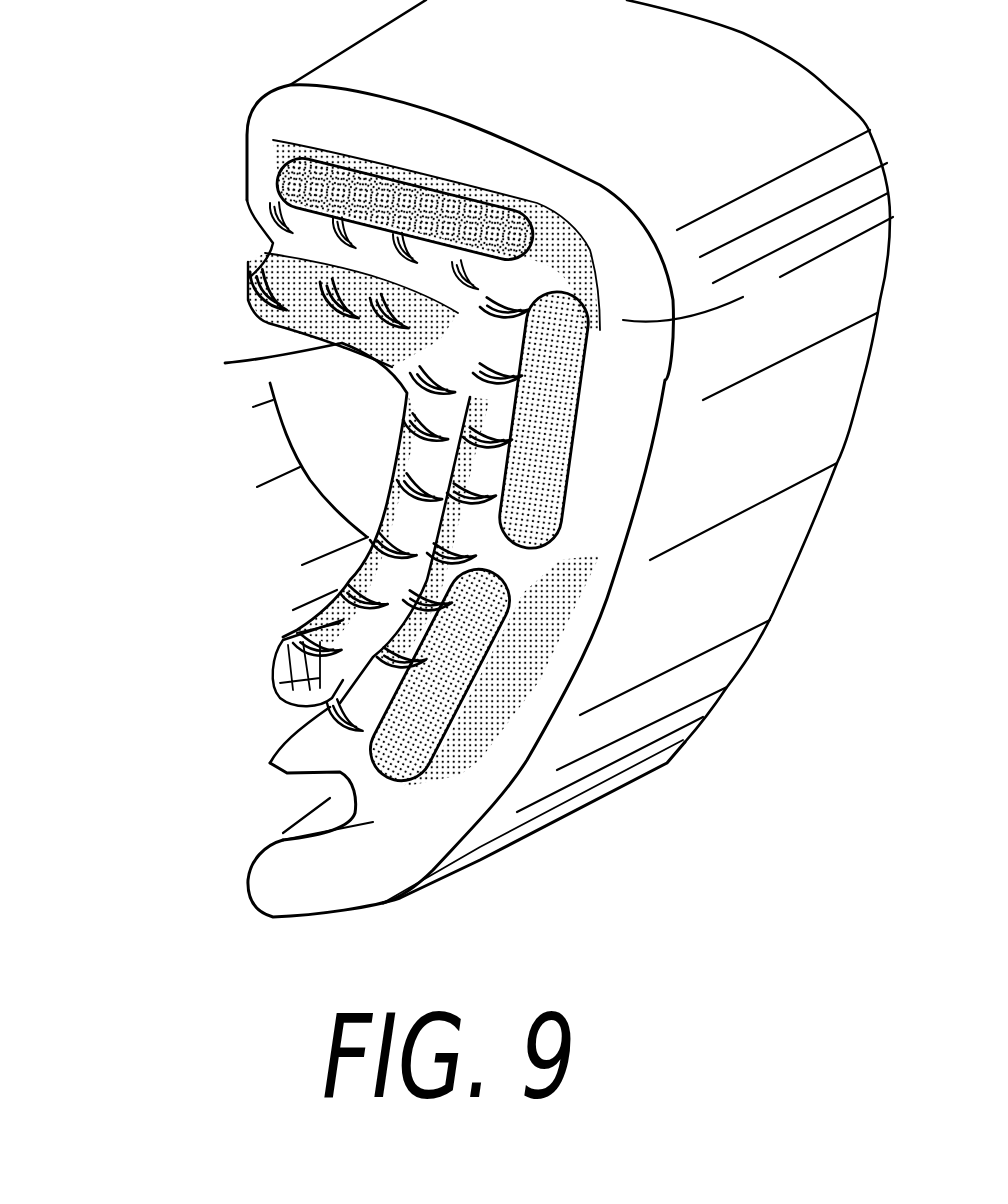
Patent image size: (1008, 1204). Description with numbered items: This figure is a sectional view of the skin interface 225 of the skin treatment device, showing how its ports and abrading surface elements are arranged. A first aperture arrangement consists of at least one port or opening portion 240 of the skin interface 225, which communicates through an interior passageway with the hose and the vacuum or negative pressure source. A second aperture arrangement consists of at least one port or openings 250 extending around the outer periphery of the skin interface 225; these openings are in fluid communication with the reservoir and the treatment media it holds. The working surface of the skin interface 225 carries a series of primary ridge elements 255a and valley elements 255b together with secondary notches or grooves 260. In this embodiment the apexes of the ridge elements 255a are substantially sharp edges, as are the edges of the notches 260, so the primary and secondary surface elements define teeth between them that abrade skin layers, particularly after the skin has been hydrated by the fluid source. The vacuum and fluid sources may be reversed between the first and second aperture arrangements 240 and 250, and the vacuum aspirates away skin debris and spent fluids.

The skin interface 225 is at (277, 157).
The port or openings 250 is at (273, 182).
The primary ridge elements 255a is at (248, 275).
The valley elements 255b is at (340, 343).
The port or opening portion 240 is at (333, 448).
The secondary notches or grooves 260 is at (283, 640).